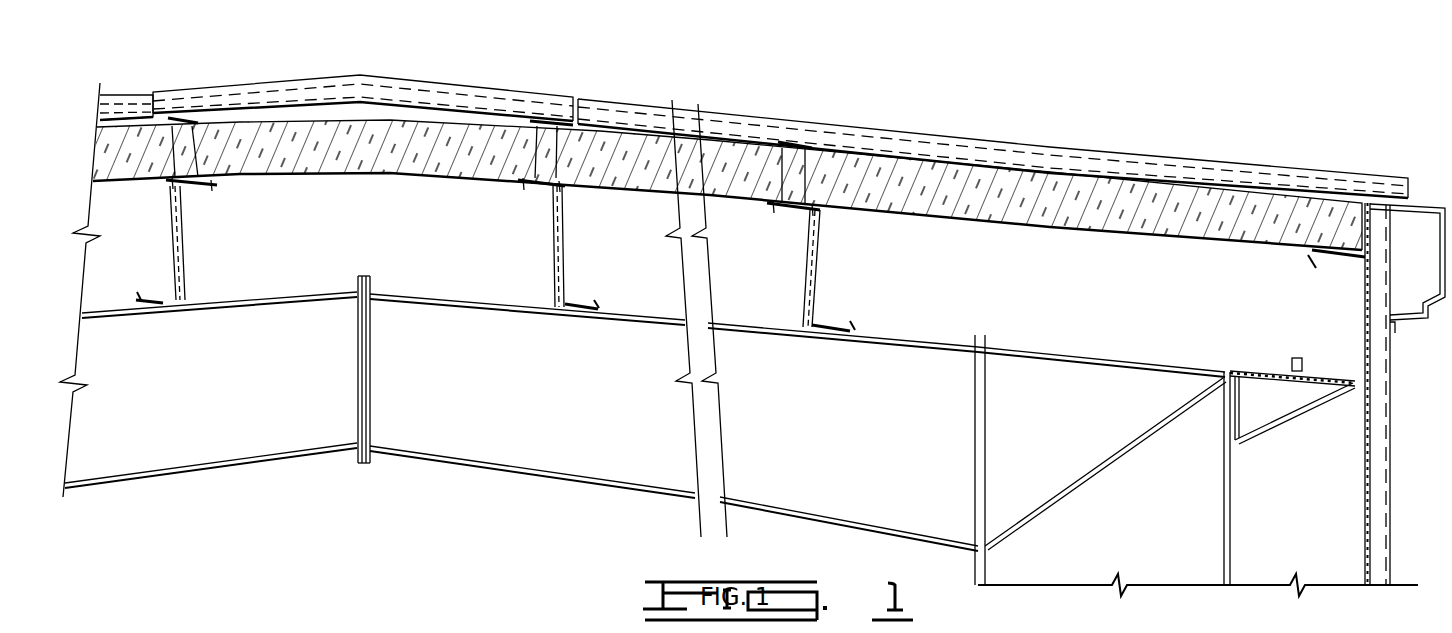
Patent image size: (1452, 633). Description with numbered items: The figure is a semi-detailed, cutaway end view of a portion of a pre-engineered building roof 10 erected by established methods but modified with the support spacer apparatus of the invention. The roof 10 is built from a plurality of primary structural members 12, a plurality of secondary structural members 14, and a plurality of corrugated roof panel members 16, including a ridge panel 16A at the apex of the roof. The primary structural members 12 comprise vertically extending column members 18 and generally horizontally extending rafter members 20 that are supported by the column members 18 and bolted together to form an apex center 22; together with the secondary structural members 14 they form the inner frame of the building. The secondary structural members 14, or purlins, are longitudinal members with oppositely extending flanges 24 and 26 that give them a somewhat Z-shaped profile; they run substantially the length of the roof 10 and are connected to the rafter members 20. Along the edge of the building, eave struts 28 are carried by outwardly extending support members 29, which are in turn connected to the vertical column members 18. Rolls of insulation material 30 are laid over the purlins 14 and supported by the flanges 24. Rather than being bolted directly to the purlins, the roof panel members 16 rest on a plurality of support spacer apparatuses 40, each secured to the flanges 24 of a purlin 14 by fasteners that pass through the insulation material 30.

The pre-engineered building roof 10 is at (636, 103).
The primary structural members 12 is at (659, 461).
The secondary structural members 14 is at (182, 253).
The corrugated roof panel members 16 is at (138, 95).
The ridge roof panel 16A is at (398, 78).
The column members 18 is at (1122, 538).
The rafter members 20 is at (212, 404).
The apex center 22 is at (381, 275).
The flange 24 is at (194, 186).
The flange 26 is at (158, 298).
The eave struts 28 is at (1365, 323).
The outwardly extending support members 29 is at (1350, 386).
The insulation material 30 is at (151, 168).
The support spacer apparatus 40 is at (185, 106).